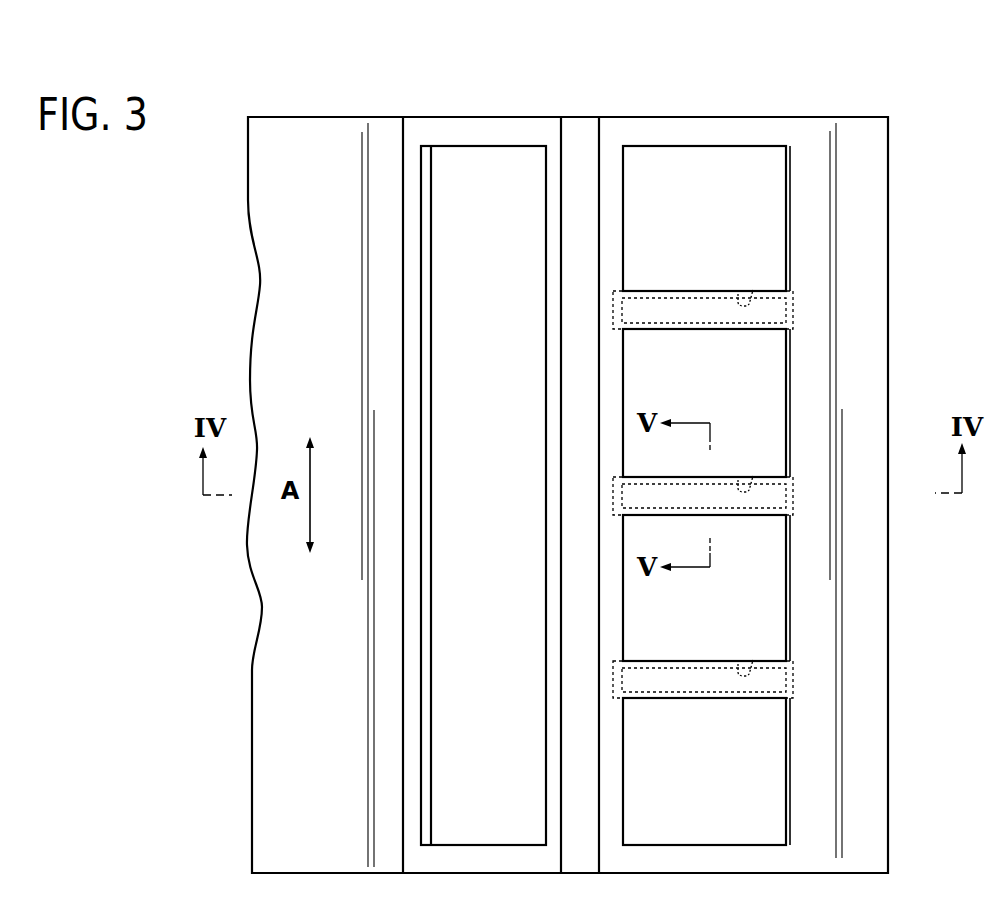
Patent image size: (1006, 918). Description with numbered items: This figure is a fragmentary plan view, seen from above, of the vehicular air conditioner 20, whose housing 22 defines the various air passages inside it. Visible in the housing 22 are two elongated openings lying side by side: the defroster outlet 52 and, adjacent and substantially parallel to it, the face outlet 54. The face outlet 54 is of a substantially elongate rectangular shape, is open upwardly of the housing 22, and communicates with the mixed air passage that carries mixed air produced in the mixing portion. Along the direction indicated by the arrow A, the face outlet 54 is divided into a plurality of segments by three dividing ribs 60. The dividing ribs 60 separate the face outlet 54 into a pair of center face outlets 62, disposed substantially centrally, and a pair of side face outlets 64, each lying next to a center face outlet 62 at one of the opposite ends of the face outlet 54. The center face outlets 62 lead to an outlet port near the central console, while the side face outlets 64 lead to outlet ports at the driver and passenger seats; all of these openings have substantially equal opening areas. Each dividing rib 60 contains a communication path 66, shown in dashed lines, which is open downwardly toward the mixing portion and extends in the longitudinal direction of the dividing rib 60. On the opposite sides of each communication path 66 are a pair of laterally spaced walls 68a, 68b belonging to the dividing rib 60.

The vehicular air conditioner 20 is at (921, 91).
The housing 22 is at (474, 116).
The defroster outlet 52 is at (468, 772).
The face outlet 54 is at (780, 458).
The dividing rib 60 is at (710, 312).
The center face outlet 62 is at (715, 388).
The side face outlet 64 is at (715, 218).
The communication path 66 is at (746, 290).
The wall 68a is at (755, 331).
The wall 68b is at (657, 290).